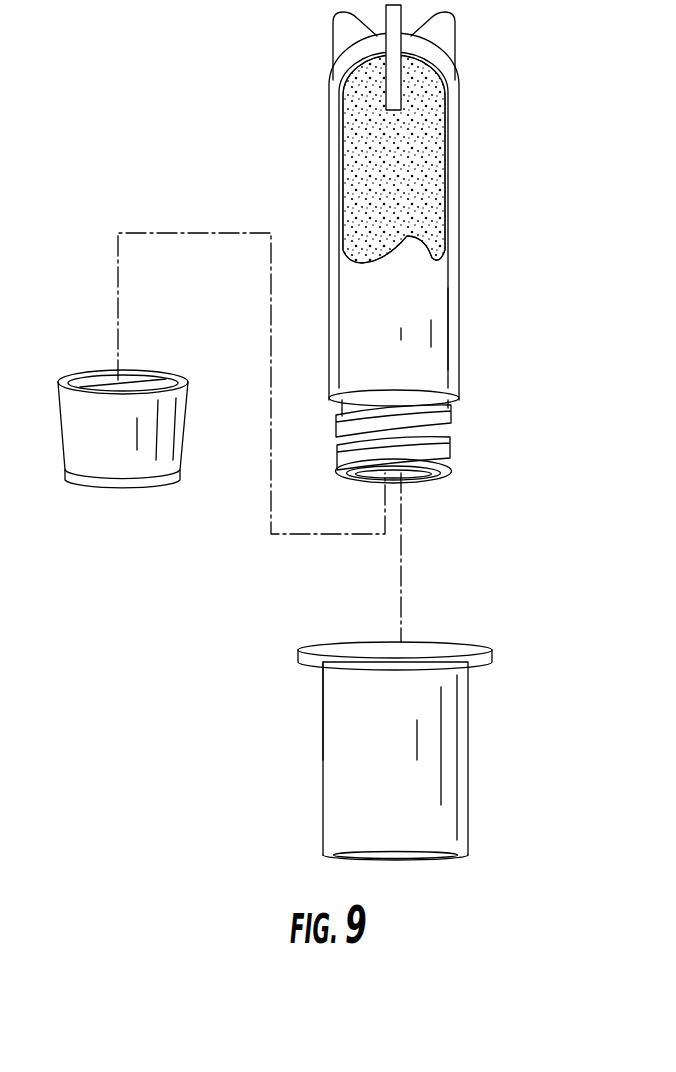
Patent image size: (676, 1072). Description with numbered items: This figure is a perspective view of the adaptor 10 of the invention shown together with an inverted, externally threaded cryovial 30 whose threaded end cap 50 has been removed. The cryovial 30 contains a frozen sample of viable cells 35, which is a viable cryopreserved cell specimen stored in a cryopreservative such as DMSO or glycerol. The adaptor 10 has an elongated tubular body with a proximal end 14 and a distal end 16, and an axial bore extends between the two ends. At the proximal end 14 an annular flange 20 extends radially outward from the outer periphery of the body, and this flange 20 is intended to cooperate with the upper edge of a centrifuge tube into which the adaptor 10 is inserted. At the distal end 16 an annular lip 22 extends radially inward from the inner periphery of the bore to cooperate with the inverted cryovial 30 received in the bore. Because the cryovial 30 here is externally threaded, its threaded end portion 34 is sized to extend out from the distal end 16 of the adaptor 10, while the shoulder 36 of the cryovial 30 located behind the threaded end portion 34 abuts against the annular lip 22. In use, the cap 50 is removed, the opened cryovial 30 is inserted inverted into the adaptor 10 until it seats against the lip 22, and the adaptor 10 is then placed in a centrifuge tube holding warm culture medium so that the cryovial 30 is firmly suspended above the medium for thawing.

The adaptor 10 is at (405, 787).
The proximal end 14 is at (326, 676).
The distal end 16 is at (463, 845).
The annular flange 20 is at (297, 655).
The annular lip 22 is at (325, 856).
The cryovial 30 is at (459, 297).
The threaded end portion 34 is at (449, 449).
The frozen sample of viable cells 35 is at (428, 152).
The shoulder 36 is at (453, 405).
The threaded end cap 50 is at (58, 432).